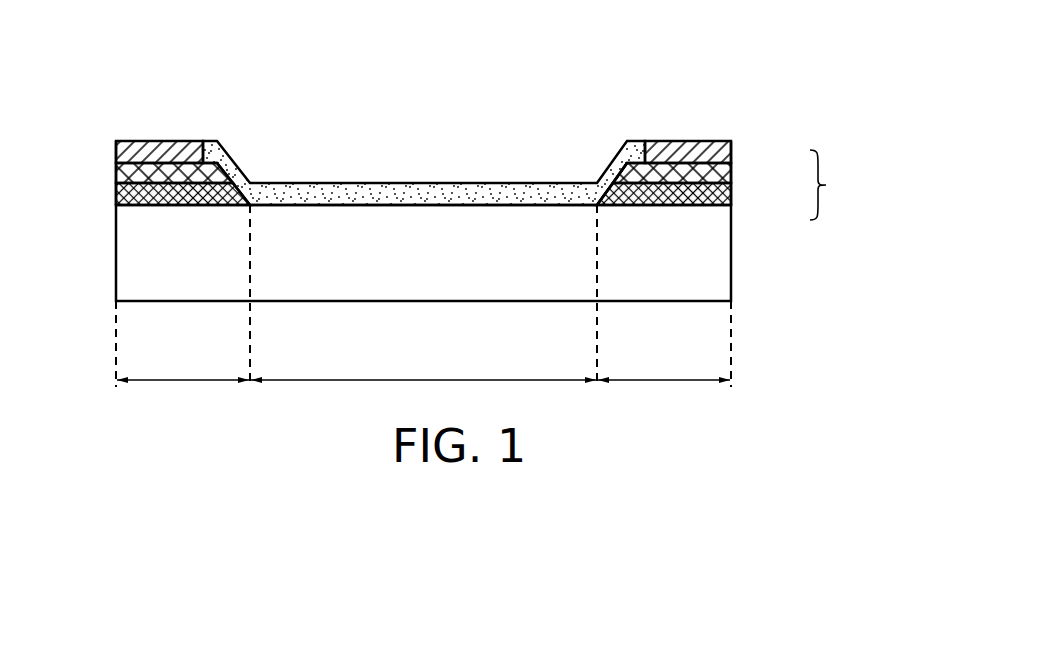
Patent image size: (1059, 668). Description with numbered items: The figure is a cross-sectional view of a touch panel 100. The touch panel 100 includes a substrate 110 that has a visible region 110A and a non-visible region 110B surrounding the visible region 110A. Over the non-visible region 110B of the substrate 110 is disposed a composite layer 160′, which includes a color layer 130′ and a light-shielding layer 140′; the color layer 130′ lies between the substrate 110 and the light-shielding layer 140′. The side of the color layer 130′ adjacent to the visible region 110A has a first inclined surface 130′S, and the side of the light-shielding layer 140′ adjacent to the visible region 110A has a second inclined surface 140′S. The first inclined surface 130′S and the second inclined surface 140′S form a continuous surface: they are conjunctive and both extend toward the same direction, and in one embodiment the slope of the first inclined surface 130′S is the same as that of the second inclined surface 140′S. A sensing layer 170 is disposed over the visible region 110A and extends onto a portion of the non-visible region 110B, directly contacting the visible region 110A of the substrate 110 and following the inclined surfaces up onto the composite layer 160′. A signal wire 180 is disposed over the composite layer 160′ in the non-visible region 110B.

The touch panel 100 is at (122, 93).
The substrate 110 is at (714, 257).
The visible region 110A is at (423, 296).
The non-visible region 110B is at (423, 366).
The color layer 130′ is at (733, 200).
The first inclined surface 130′S is at (601, 181).
The light-shielding layer 140′ is at (733, 171).
The second inclined surface 140′S is at (618, 165).
The composite layer 160′ is at (848, 185).
The sensing layer 170 is at (287, 189).
The signal wire 180 is at (681, 147).